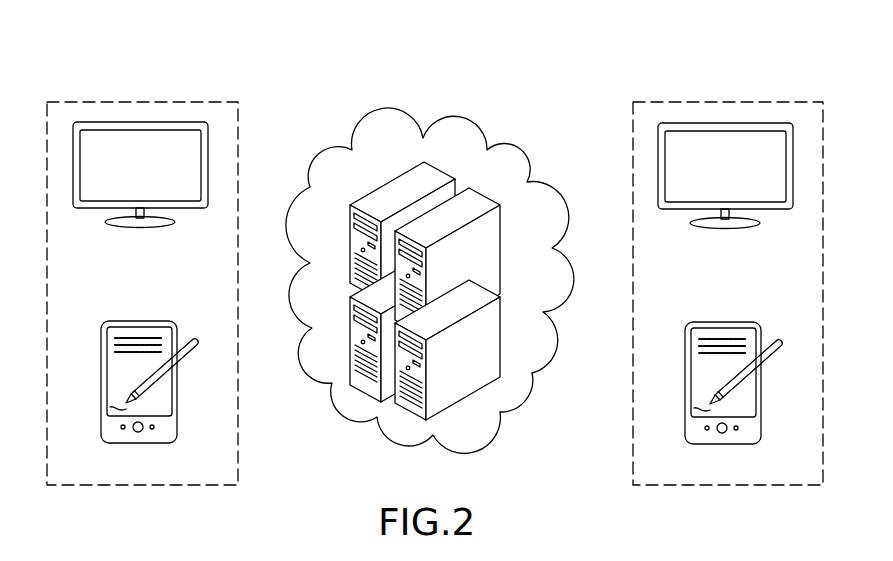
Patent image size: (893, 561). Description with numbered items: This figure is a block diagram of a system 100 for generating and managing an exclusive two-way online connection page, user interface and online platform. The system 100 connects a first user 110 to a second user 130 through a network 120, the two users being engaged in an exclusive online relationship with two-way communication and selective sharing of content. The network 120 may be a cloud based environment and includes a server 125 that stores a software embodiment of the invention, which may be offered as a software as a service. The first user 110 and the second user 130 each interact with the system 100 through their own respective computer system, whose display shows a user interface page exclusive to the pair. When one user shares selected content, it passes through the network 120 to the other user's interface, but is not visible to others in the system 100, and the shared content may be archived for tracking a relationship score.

The system 100 is at (374, 90).
The first user 110 is at (144, 100).
The network 120 is at (471, 442).
The server 125 is at (497, 180).
The second user 130 is at (727, 100).